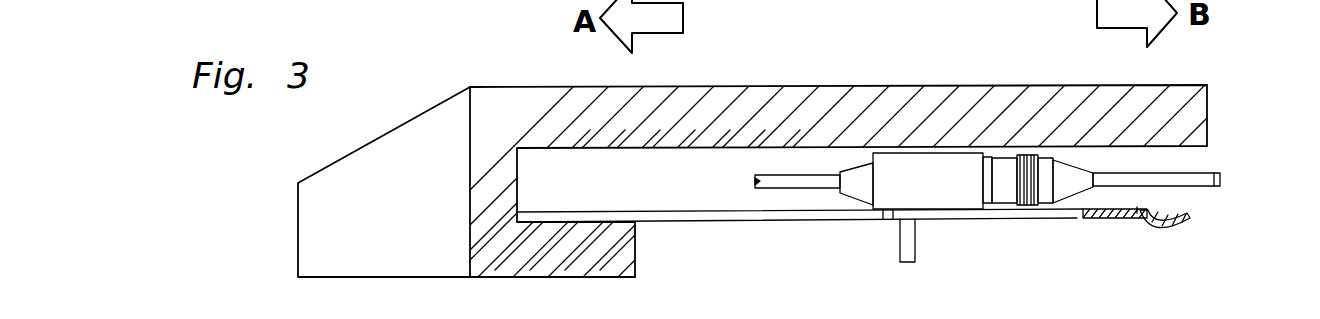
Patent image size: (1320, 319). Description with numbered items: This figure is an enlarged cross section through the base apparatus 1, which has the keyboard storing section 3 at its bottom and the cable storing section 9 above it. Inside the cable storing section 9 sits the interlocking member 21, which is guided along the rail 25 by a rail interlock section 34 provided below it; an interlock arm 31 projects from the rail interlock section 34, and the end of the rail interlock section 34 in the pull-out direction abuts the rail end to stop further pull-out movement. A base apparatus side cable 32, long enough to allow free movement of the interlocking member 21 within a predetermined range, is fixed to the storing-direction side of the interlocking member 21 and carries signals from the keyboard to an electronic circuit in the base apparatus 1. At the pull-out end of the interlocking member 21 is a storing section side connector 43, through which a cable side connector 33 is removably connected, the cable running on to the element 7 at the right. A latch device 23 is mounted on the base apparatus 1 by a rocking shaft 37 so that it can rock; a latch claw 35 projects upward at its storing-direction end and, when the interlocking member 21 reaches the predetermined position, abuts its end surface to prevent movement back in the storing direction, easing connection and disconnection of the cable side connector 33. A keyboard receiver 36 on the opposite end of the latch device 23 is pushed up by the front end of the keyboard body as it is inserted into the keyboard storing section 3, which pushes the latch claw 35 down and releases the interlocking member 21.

The base apparatus 1 is at (548, 87).
The keyboard storing section 3 is at (741, 238).
The optical fiber cord 7 is at (1205, 187).
The cable storing section 9 is at (780, 163).
The interlocking member 21 is at (923, 162).
The latch device 23 is at (1097, 228).
The rail 25 is at (698, 219).
The interlock arm 31 is at (913, 240).
The base apparatus side cable 32 is at (787, 183).
The cable side connector 33 is at (1000, 165).
The rail interlock section 34 is at (893, 220).
The latch claw 35 is at (1088, 210).
The keyboard receiver 36 is at (1186, 226).
The rocking shaft 37 is at (1140, 218).
The storing section side connector 43 is at (1000, 208).